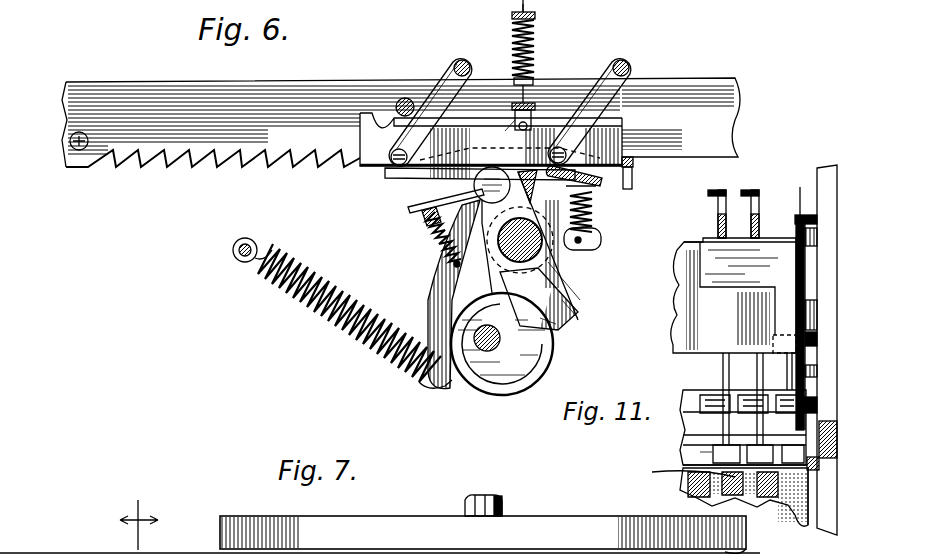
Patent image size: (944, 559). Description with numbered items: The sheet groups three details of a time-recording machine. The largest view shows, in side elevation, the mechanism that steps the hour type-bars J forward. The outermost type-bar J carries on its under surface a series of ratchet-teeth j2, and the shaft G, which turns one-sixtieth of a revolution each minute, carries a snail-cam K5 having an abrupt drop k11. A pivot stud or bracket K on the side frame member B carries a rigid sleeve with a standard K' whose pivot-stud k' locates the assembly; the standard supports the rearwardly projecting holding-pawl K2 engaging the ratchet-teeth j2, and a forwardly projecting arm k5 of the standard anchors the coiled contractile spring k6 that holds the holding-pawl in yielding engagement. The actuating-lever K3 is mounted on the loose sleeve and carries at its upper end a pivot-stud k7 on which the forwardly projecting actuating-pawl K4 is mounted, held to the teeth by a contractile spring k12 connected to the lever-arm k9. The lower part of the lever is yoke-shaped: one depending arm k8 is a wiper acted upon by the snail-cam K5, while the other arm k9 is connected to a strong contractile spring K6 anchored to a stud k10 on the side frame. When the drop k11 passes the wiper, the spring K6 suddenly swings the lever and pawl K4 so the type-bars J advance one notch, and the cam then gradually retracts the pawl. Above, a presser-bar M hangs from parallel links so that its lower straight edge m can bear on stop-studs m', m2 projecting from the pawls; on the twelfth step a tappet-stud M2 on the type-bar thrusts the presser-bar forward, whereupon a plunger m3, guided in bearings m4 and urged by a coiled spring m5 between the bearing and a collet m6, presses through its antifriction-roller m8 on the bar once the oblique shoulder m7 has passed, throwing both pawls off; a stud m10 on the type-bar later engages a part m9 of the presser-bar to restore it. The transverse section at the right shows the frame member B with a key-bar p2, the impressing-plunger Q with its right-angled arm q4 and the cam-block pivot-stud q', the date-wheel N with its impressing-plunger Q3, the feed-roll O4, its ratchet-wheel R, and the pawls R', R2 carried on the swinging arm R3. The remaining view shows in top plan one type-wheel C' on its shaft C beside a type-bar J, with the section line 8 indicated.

In FIG. 6, the type-bar J is at (401, 122).
In FIG. 11, the type-bar J is at (742, 492).
In FIG. 6, the ratchet-teeth j2 is at (148, 160).
In FIG. 6, the tappet-stud M2 is at (81, 150).
In FIG. 6, the holding-pawl K2 is at (491, 135).
In FIG. 6, the presser-bar M is at (372, 135).
In FIG. 6, the stop-stud m' is at (505, 108).
In FIG. 6, the plunger m3 is at (527, 8).
In FIG. 6, the lower straight edge m is at (465, 183).
In FIG. 6, the coiled spring m5 is at (545, 23).
In FIG. 6, the collet m6 is at (535, 50).
In FIG. 6, the bearings m4 is at (535, 100).
In FIG. 6, the antifriction-roller m8 is at (532, 128).
In FIG. 6, the oblique shoulder m7 is at (499, 119).
In FIG. 6, the stop-stud m2 is at (578, 178).
In FIG. 6, the stud m10 is at (636, 163).
In FIG. 6, the projecting part m9 is at (634, 178).
In FIG. 6, the pivot stud or bracket K is at (539, 243).
In FIG. 6, the pivot-stud k' is at (580, 287).
In FIG. 6, the wiper arm k8 is at (565, 320).
In FIG. 6, the drop of snail-cam k11 is at (543, 320).
In FIG. 6, the standard K' is at (596, 203).
In FIG. 6, the coiled contractile spring k6 is at (592, 220).
In FIG. 6, the forwardly-projecting arm k5 is at (600, 248).
In FIG. 6, the pivot-stud k7 is at (440, 200).
In FIG. 6, the actuating-pawl K4 is at (426, 222).
In FIG. 6, the contractile spring k12 is at (440, 242).
In FIG. 6, the lever-arm k9 is at (440, 302).
In FIG. 6, the actuating-lever K3 is at (539, 299).
In FIG. 6, the shaft G is at (488, 352).
In FIG. 6, the snail-cam K5 is at (500, 343).
In FIG. 6, the stud k10 is at (233, 250).
In FIG. 6, the contractile spring K6 is at (333, 322).
In FIG. 11, the end frame member B is at (826, 165).
In FIG. 11, the swinging arm R3 is at (808, 300).
In FIG. 11, the pawl R' is at (833, 350).
In FIG. 11, the impressing-plunger Q3 is at (798, 205).
In FIG. 11, the right-angled arm q4 is at (728, 188).
In FIG. 11, the key-bar p2 is at (728, 247).
In FIG. 11, the plunger Q is at (755, 365).
In FIG. 11, the pivot-stud q' is at (748, 427).
In FIG. 11, the feed-roll O4 is at (714, 447).
In FIG. 11, the ratchet-wheel R is at (841, 439).
In FIG. 11, the pawl R2 is at (820, 465).
In FIG. 11, the type-wheel C' is at (723, 475).
In FIG. 7, the type-wheel C' is at (482, 516).
In FIG. 11, the date-wheel N is at (812, 522).
In FIG. 7, the section line 8 is at (139, 516).
In FIG. 7, the shaft C is at (498, 488).